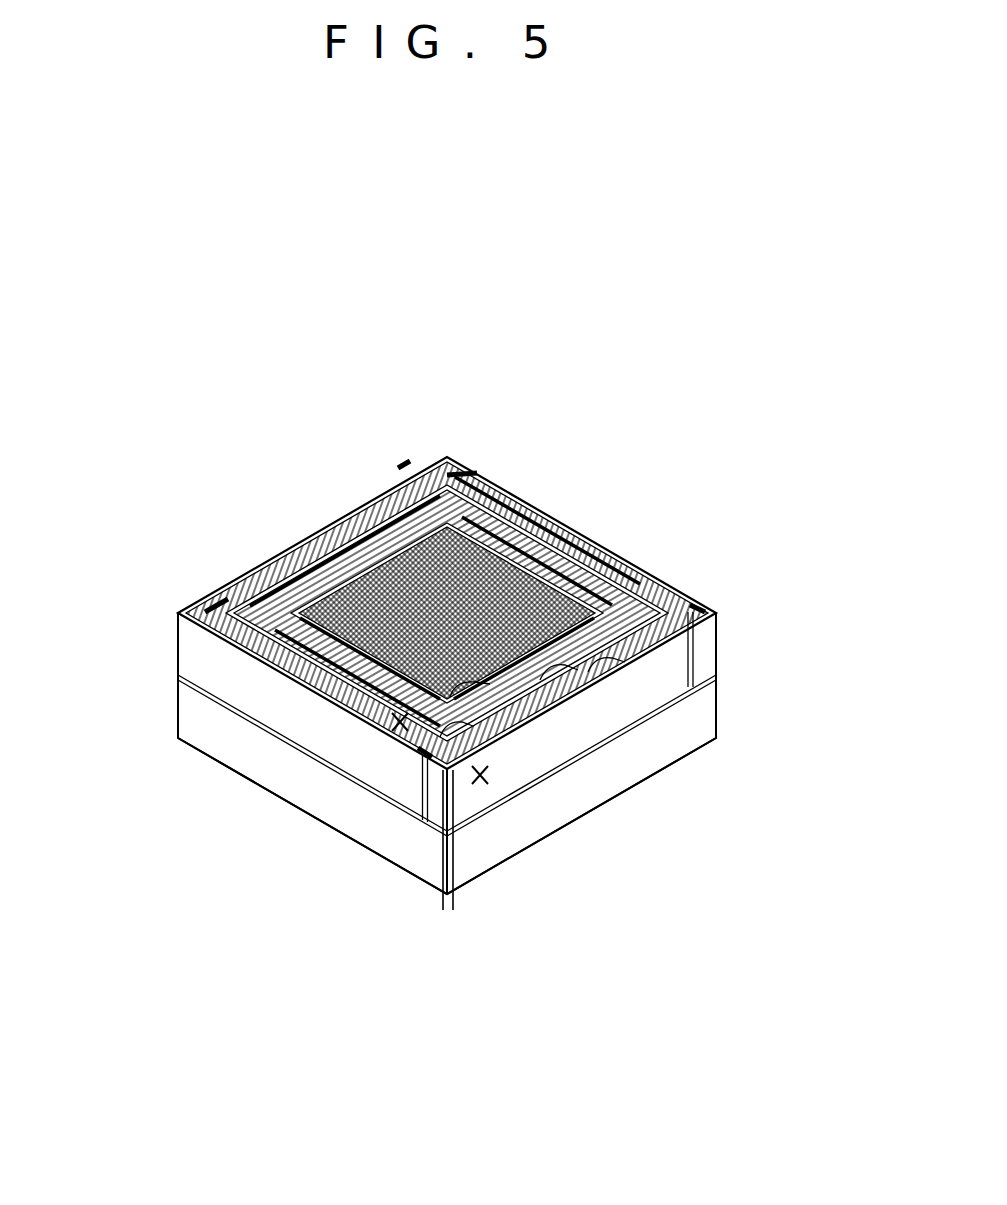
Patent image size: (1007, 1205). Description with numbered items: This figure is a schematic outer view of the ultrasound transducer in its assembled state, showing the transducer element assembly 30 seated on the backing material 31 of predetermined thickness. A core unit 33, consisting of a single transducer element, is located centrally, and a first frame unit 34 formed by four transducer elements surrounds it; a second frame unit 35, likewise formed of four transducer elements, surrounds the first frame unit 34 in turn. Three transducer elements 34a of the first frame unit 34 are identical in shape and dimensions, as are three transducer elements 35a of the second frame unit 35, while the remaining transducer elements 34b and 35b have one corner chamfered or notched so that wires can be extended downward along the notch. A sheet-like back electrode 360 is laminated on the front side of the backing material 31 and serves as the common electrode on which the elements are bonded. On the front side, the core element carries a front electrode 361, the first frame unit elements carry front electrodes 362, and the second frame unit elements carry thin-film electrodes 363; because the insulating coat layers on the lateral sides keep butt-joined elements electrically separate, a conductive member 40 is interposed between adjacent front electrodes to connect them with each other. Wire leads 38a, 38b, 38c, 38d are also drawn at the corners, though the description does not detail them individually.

The transducer element assembly 30 is at (565, 417).
The backing material 31 is at (330, 810).
The core unit 33 is at (443, 603).
The first frame unit 34 is at (517, 517).
The transducer elements of the first frame unit 34a is at (262, 607).
The notched transducer element of the first frame unit 34b is at (595, 663).
The second frame unit 35 is at (690, 587).
The transducer elements of the second frame unit 35a is at (510, 497).
The notched transducer element of the second frame unit 35b is at (627, 673).
The back electrode 360 is at (717, 687).
The front electrode of the core transducer element 361 is at (565, 580).
The front electrode of the first frame unit elements 362 is at (717, 676).
The thin-film electrode of the second frame unit elements 363 is at (325, 706).
The side conductor 38a is at (570, 690).
The side conductor 38b is at (510, 692).
The side conductor 38c is at (454, 808).
The side conductor 38d is at (443, 867).
The conductive member 40 is at (446, 468).